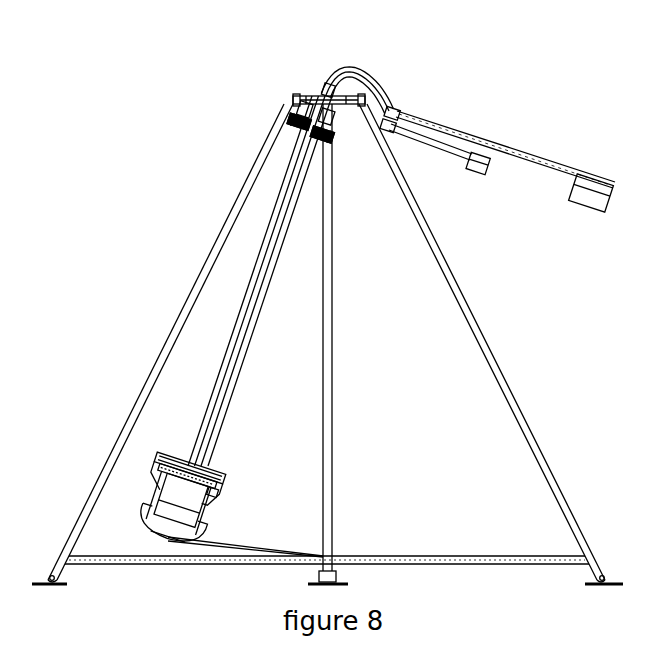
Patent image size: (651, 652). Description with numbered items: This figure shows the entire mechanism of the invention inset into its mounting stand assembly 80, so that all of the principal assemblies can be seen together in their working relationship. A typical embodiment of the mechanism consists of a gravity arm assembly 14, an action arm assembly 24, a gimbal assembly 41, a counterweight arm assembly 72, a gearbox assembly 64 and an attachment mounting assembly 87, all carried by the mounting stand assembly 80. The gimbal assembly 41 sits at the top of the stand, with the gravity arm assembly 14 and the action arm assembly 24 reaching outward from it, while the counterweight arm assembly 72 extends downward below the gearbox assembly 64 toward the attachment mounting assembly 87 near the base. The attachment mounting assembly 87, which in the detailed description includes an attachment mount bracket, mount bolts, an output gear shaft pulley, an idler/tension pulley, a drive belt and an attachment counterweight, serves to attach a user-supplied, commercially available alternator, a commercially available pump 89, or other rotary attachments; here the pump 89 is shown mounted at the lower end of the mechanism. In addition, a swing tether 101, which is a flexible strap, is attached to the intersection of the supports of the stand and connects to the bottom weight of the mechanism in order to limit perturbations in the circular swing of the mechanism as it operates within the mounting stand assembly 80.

The gravity arm assembly 14 is at (530, 157).
The action arm assembly 24 is at (405, 136).
The gimbal assembly 41 is at (318, 97).
The gearbox assembly 64 is at (295, 124).
The counterweight arm assembly 72 is at (255, 278).
The mounting stand assembly 80 is at (448, 277).
The attachment mounting assembly 87 is at (157, 490).
The pump 89 is at (155, 468).
The swing tether 101 is at (242, 545).